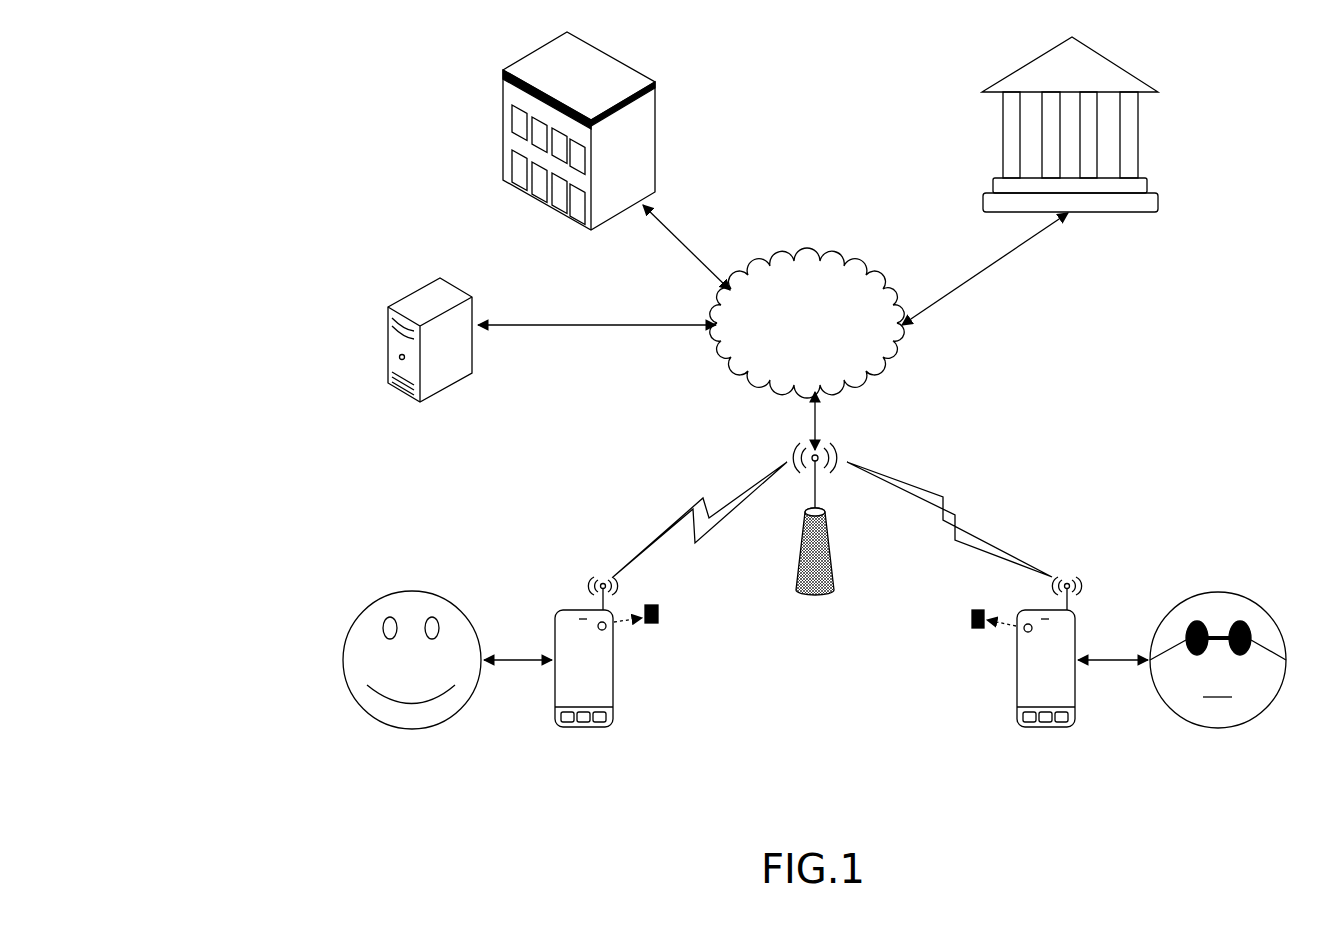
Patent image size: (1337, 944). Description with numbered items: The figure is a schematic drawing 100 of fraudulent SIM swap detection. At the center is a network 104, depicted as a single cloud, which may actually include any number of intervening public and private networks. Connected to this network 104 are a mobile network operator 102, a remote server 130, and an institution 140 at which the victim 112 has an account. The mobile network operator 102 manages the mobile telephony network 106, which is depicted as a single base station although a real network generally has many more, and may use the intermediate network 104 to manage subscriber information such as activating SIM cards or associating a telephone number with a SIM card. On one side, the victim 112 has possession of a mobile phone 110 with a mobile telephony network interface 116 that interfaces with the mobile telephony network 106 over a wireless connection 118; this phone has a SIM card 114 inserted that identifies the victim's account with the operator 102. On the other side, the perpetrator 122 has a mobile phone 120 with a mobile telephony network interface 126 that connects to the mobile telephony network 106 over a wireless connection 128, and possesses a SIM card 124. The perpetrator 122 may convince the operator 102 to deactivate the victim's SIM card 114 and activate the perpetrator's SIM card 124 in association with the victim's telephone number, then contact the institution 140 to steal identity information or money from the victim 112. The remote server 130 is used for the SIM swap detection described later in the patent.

The schematic drawing 100 is at (288, 98).
The mobile network operator 102 is at (503, 70).
The network 104 is at (807, 323).
The mobile telephony network 106 is at (810, 592).
The mobile phone 110 is at (568, 608).
The victim 112 is at (412, 590).
The SIM card 114 is at (648, 640).
The mobile telephony network interface 116 is at (598, 556).
The wireless connection 118 is at (694, 505).
The mobile phone 120 is at (1033, 727).
The perpetrator 122 is at (1218, 592).
The SIM card 124 is at (985, 655).
The mobile telephony network interface 126 is at (1063, 556).
The wireless connection 128 is at (943, 532).
The remote server 130 is at (440, 278).
The institution 140 is at (1030, 62).